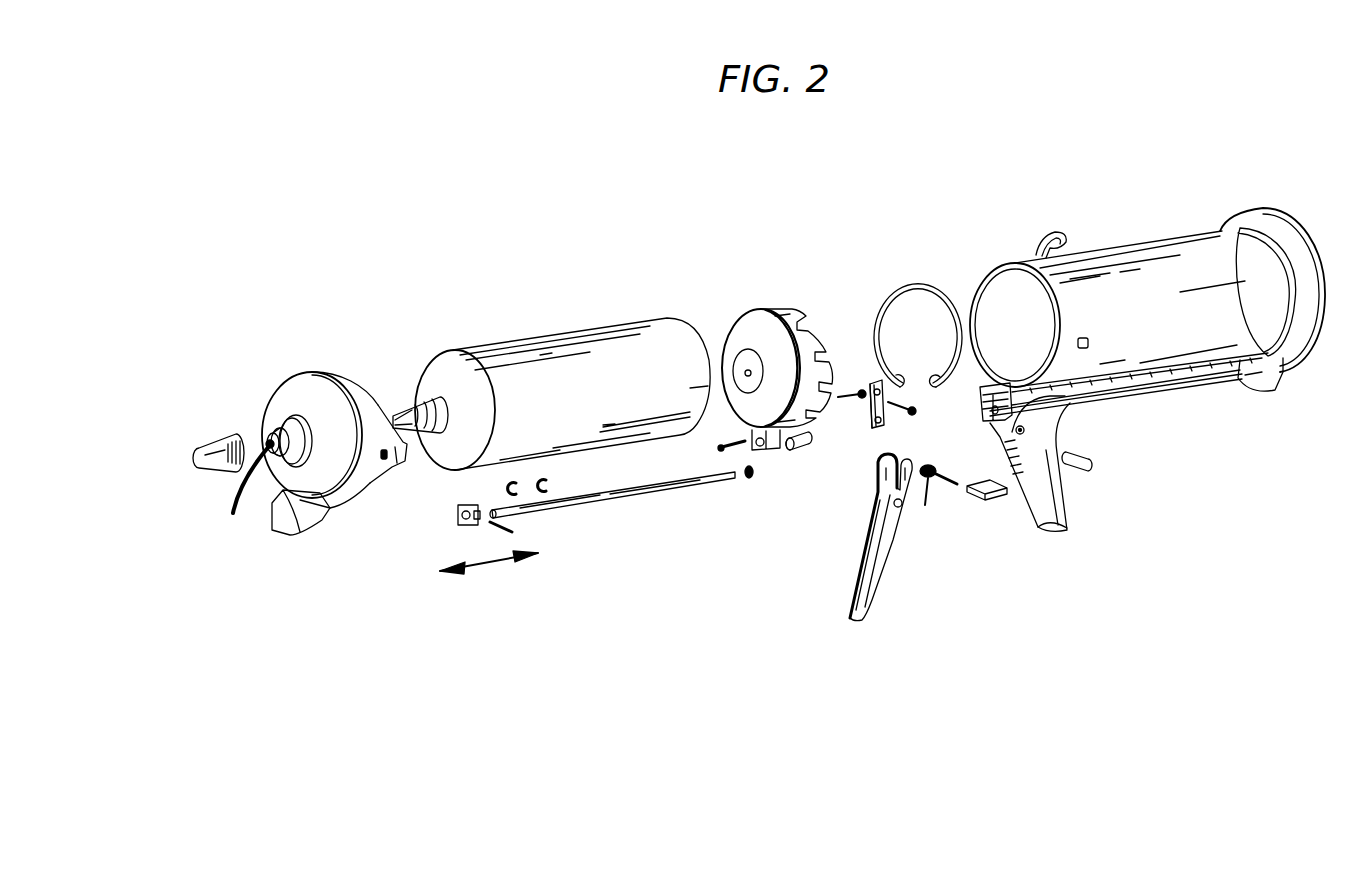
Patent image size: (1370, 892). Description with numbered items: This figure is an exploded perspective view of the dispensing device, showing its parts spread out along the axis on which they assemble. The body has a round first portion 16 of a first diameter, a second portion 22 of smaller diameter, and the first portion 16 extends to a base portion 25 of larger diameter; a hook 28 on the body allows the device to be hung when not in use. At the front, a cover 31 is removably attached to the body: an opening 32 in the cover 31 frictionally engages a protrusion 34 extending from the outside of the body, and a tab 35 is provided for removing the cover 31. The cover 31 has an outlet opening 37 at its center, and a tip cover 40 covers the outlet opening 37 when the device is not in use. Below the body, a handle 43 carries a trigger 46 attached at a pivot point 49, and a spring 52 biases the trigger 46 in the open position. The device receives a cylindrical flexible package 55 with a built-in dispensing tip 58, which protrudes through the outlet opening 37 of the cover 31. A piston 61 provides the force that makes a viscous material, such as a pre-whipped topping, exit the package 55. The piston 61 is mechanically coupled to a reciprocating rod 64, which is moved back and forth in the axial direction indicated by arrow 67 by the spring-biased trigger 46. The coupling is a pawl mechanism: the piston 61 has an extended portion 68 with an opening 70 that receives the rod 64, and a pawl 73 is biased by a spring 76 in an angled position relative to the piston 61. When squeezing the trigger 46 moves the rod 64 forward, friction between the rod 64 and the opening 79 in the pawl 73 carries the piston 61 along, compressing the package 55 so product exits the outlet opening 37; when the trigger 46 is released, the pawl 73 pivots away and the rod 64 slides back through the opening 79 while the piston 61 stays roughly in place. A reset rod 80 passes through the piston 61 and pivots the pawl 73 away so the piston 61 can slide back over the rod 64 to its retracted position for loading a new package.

The first portion 16 is at (1165, 250).
The second portion 22 is at (1197, 380).
The base portion 25 is at (1298, 248).
The hook 28 is at (1042, 240).
The cover 31 is at (292, 388).
The opening 32 is at (387, 461).
The protrusion 34 is at (1085, 353).
The tab 35 is at (398, 461).
The outlet opening 37 is at (248, 490).
The tip cover 40 is at (215, 447).
The handle 43 is at (1058, 492).
The trigger 46 is at (880, 550).
The pivot point 49 is at (1095, 467).
The spring 52 is at (925, 503).
The flexible package 55 is at (652, 325).
The dispensing tip 58 is at (413, 407).
The piston 61 is at (752, 330).
The reciprocating rod 64 is at (606, 500).
The arrow 67 is at (490, 568).
The extended portion 68 is at (778, 436).
The opening 70 is at (756, 440).
The pawl 73 is at (868, 408).
The spring 76 is at (912, 290).
The opening 79 is at (876, 426).
The reset rod 80 is at (722, 442).